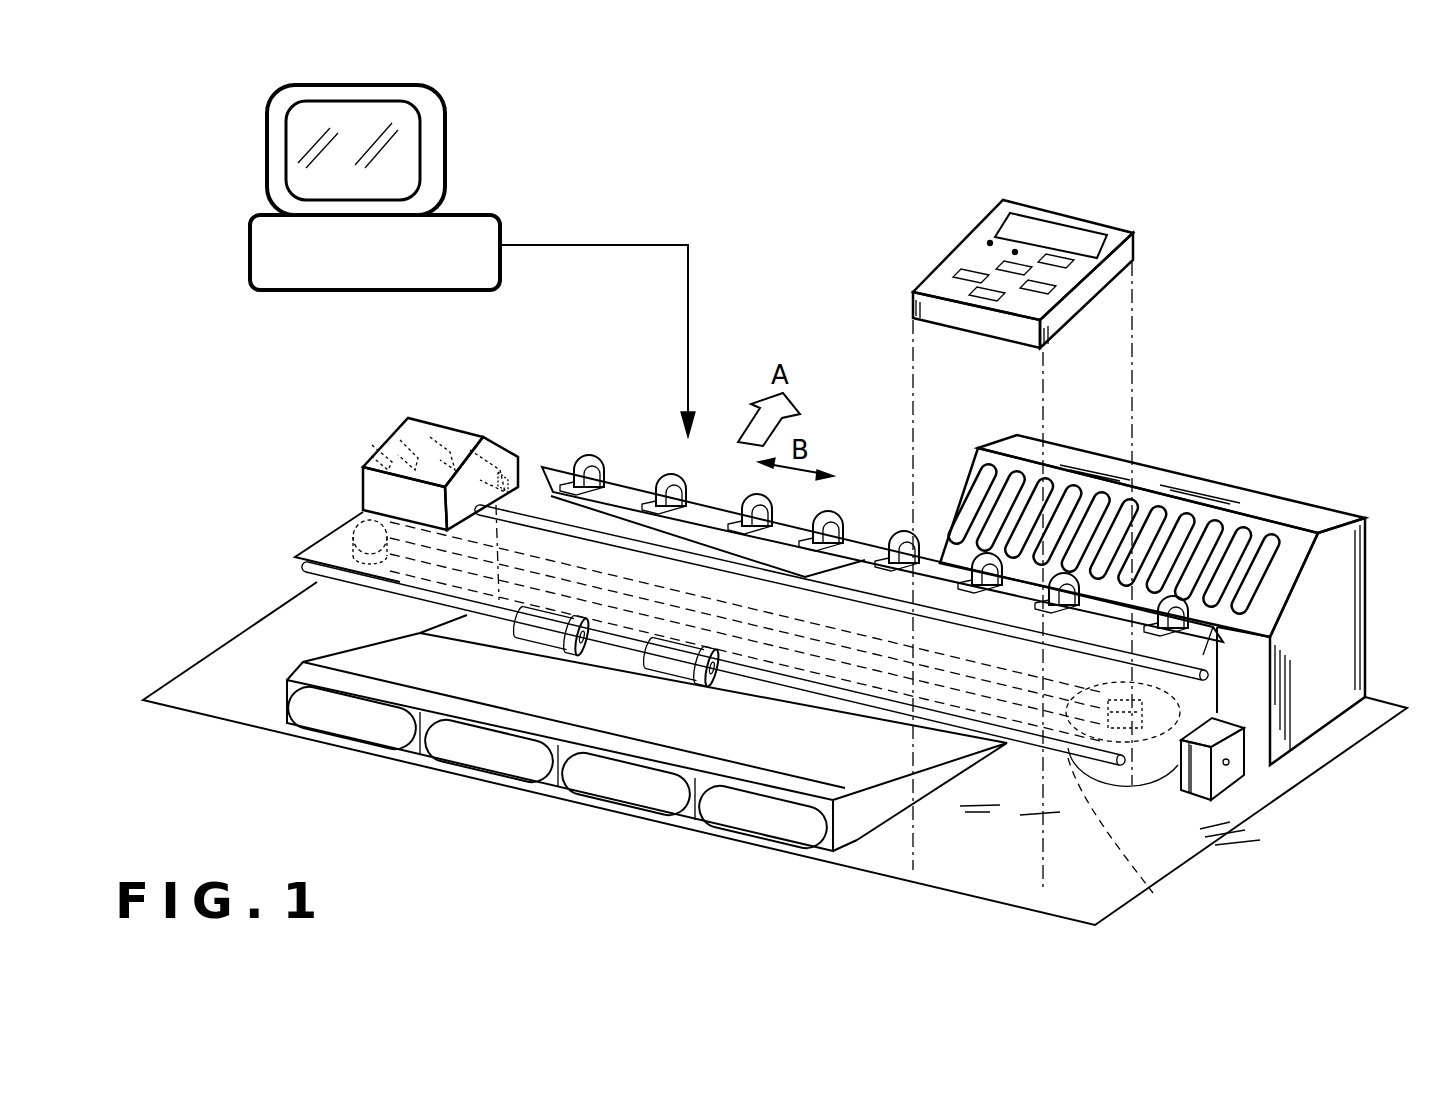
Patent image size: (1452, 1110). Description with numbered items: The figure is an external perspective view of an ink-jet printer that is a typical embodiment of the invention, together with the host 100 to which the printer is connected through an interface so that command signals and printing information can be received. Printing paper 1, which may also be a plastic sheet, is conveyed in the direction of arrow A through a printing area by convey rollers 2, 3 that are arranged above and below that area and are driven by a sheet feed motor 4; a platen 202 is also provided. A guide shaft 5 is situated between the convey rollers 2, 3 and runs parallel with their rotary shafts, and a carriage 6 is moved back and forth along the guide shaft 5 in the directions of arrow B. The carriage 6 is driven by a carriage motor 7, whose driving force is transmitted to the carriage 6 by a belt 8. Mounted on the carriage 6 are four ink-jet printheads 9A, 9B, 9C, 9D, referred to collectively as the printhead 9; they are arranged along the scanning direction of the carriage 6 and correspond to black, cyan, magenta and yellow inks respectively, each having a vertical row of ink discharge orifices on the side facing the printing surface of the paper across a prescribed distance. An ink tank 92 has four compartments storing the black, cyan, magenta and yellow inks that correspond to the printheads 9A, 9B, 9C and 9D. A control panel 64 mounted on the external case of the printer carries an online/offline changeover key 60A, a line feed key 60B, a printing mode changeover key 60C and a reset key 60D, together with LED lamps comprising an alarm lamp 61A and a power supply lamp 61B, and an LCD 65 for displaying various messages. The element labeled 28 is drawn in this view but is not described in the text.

The printing paper 1 is at (612, 518).
The convey roller 2 is at (813, 517).
The convey roller 3 is at (684, 670).
The sheet feed motor 4 is at (1244, 773).
The guide shaft 5 is at (1200, 667).
The carriage 6 is at (378, 497).
The carriage motor 7 is at (1153, 760).
The belt 8 is at (1118, 844).
The printhead 9 is at (425, 400).
The printhead (Bk-head) 9A is at (501, 429).
The printhead (C-head) 9B is at (460, 422).
The printhead (M-head) 9C is at (418, 433).
The printhead (Y-head) 9D is at (370, 433).
The sample rack 28 is at (1290, 507).
The ink tank 92 is at (762, 818).
The host 100 is at (471, 233).
The platen 202 is at (1340, 620).
The control panel 64 is at (1133, 245).
The LCD 65 is at (1040, 228).
The online/offline changeover key 60A is at (1070, 260).
The line feed key 60B is at (1050, 258).
The printing mode changeover key 60C is at (1000, 277).
The reset key 60D is at (983, 293).
The alarm lamp 61A is at (1015, 252).
The power supply lamp 61B is at (990, 243).